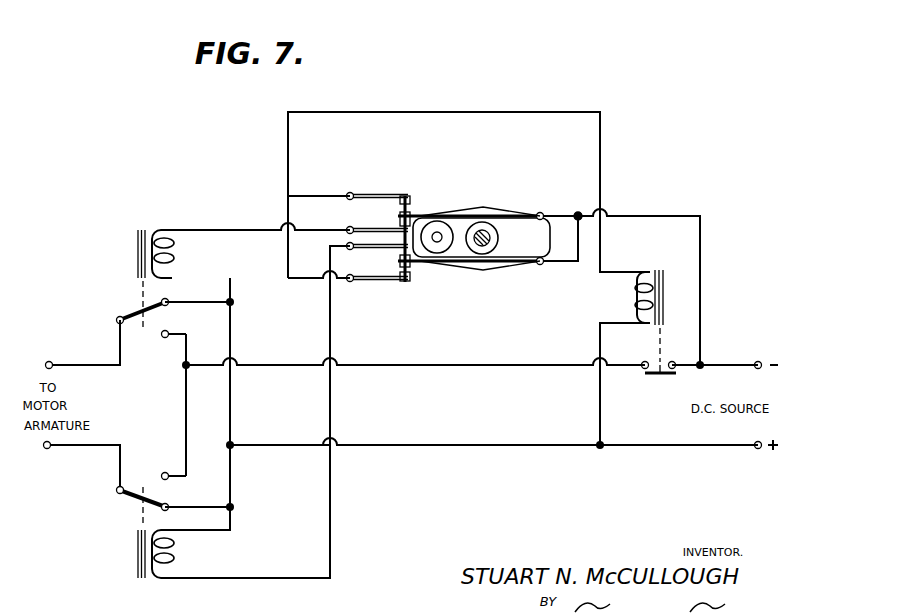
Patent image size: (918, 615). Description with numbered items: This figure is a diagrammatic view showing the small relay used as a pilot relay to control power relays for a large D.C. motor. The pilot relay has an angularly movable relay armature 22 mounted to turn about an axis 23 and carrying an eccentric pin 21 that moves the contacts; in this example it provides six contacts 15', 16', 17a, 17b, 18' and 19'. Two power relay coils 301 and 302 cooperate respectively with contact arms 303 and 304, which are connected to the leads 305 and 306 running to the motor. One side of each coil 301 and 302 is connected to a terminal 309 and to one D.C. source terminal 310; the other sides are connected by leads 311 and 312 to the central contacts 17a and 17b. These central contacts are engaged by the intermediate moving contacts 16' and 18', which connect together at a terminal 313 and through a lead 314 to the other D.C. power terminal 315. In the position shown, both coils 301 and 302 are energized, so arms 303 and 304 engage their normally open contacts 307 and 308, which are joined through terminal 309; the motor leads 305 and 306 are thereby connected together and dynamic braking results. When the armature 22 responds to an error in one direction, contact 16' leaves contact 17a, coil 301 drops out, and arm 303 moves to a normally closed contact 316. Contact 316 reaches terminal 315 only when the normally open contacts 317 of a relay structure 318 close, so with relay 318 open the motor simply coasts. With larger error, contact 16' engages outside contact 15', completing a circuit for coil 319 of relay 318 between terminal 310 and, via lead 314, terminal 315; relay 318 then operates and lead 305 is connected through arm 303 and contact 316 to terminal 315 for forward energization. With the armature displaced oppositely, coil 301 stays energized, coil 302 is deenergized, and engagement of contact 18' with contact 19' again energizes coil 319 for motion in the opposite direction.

The power relay coil 301 is at (172, 236).
The power relay coil 302 is at (165, 572).
The contact arm 303 is at (140, 308).
The contact arm 304 is at (136, 500).
The motor lead 305 is at (84, 365).
The motor lead 306 is at (73, 448).
The normally open contact 307 is at (196, 312).
The normally open contact 308 is at (198, 506).
The terminal 309 is at (232, 442).
The D.C. source terminal 310 is at (757, 452).
The lead 311 is at (218, 230).
The lead 312 is at (250, 580).
The terminal 313 is at (580, 213).
The lead 314 is at (702, 250).
The D.C. power terminal 315 is at (760, 361).
The normally closed contact 316 is at (162, 338).
The normally open relay contacts 317 is at (660, 375).
The relay structure 318 is at (670, 274).
The relay coil 319 is at (634, 305).
The outside contact 15' is at (396, 184).
The intermediate moving contact 16' is at (429, 207).
The central contact 17a is at (398, 228).
The central contact 17b is at (398, 253).
The intermediate moving contact 18' is at (425, 273).
The outside contact 19' is at (379, 294).
The pin 21 is at (437, 237).
The relay armature 22 is at (483, 270).
The axis 23 is at (489, 243).